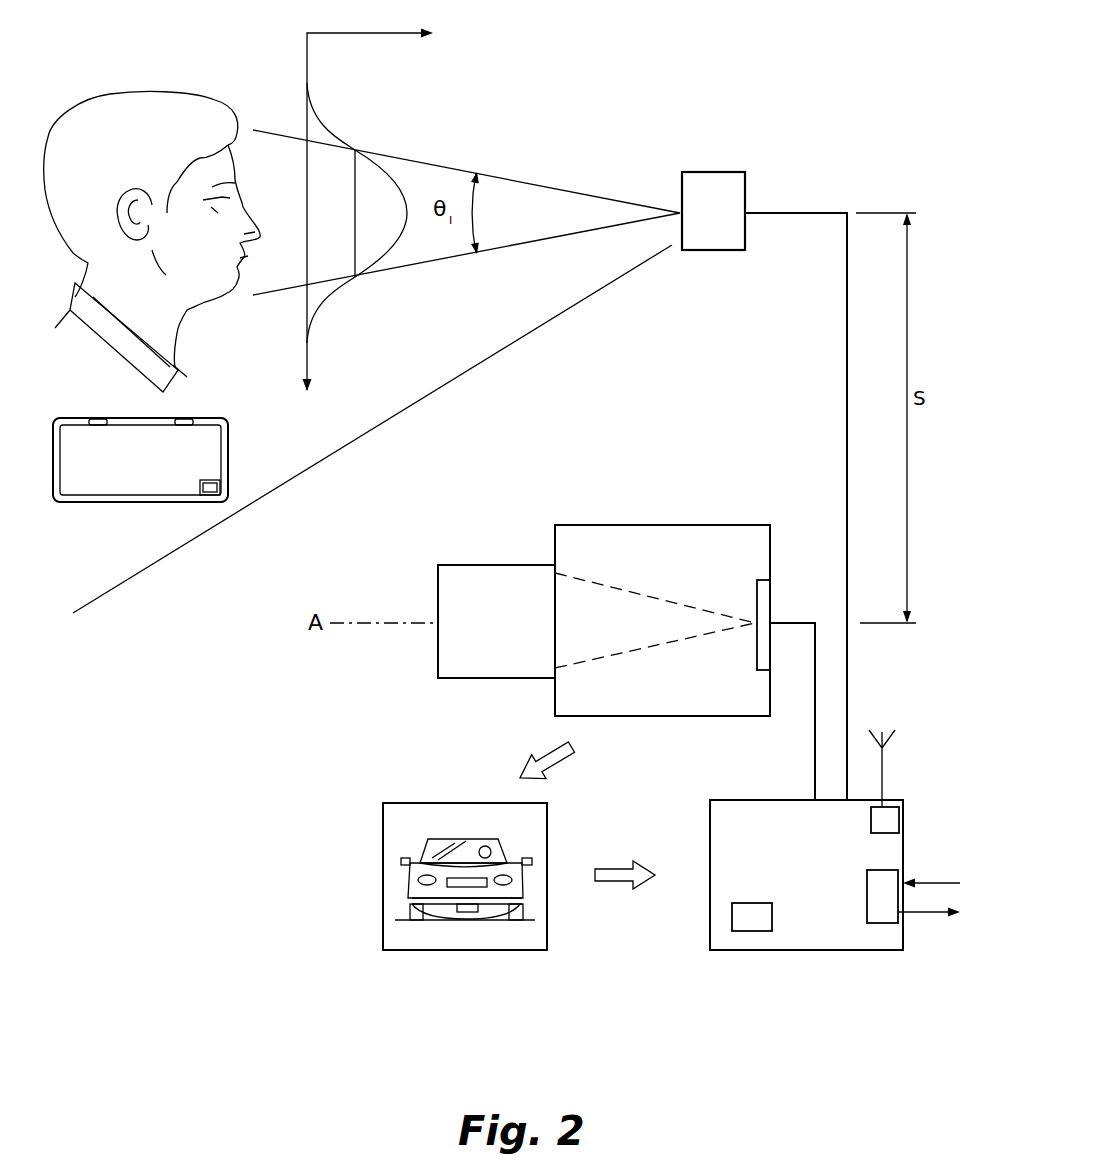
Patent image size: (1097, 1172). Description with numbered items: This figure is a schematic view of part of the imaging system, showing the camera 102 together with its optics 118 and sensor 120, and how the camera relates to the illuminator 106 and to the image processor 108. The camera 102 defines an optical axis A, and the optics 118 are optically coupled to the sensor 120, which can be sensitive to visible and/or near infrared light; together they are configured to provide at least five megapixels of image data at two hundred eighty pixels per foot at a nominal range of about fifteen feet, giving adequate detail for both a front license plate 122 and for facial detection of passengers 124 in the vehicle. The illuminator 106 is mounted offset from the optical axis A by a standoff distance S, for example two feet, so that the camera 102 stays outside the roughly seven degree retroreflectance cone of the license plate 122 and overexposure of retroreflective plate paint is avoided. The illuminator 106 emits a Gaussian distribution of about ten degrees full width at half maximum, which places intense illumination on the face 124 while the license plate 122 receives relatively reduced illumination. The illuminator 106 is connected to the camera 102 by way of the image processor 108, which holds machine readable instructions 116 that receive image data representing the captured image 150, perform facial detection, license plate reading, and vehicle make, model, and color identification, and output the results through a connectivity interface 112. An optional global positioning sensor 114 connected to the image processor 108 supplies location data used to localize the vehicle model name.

The passenger face 124 is at (148, 70).
The license plate 122 is at (88, 515).
The illuminator 106 is at (719, 151).
The camera 102 is at (658, 515).
The optics 118 is at (488, 549).
The sensor 120 is at (765, 598).
The image 150 is at (450, 792).
The image processor 108 is at (722, 794).
The global positioning sensor 114 is at (890, 818).
The connectivity interface 112 is at (883, 908).
The machine readable instructions 116 is at (748, 920).